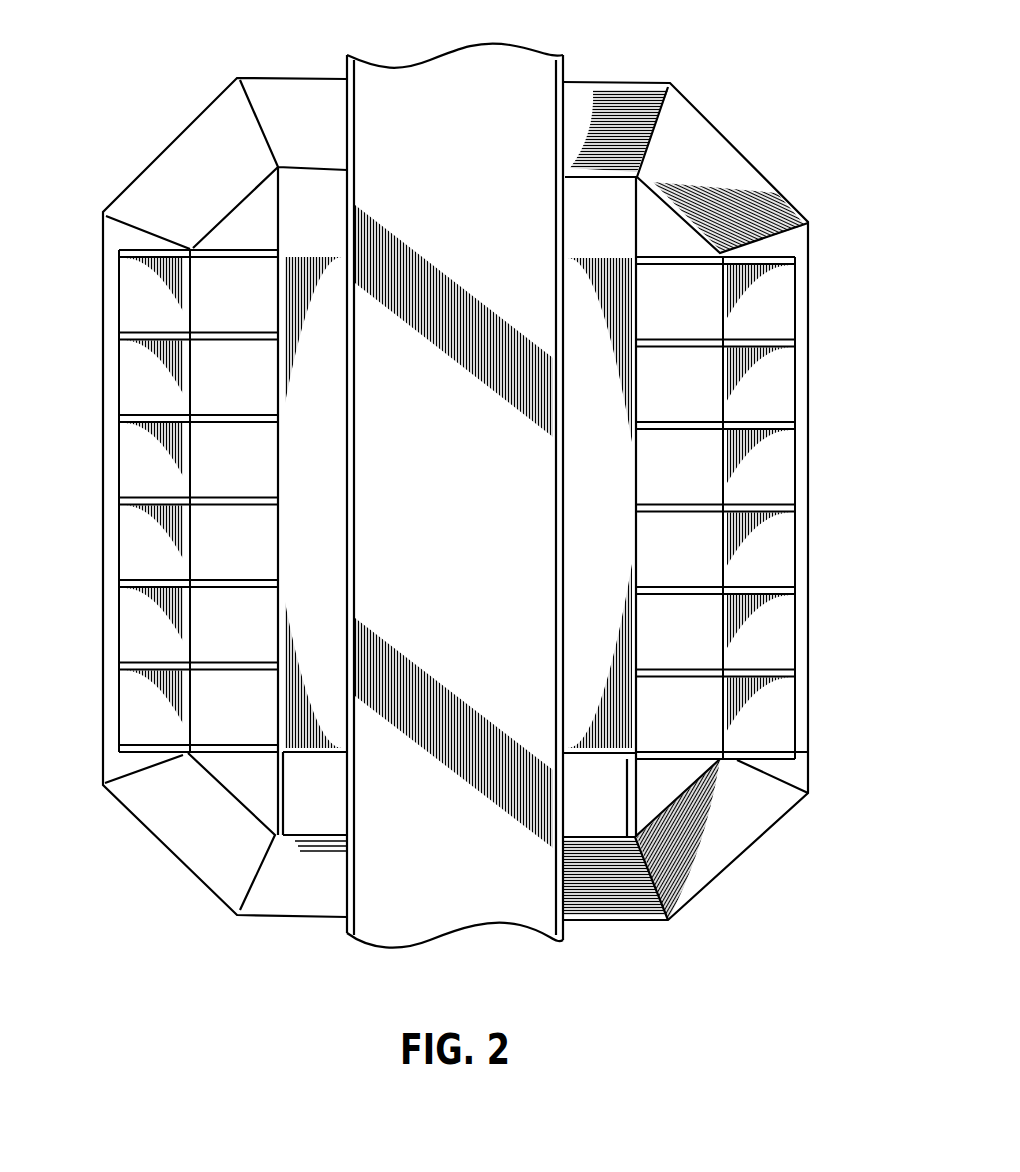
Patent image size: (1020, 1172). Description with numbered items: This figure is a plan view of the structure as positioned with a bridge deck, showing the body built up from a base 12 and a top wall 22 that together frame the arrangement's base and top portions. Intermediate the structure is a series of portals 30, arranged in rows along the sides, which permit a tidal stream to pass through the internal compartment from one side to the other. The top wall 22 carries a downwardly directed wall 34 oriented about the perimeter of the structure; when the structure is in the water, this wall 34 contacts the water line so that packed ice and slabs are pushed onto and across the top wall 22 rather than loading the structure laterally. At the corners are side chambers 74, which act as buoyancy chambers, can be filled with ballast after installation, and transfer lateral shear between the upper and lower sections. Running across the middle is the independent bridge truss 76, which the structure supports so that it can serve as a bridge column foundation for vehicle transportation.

The base 12 is at (793, 770).
The top wall 22 is at (322, 513).
The portals 30 is at (220, 383).
The downwardly directed wall 34 is at (138, 462).
The side chambers 74 is at (613, 197).
The bridge truss 76 is at (567, 119).